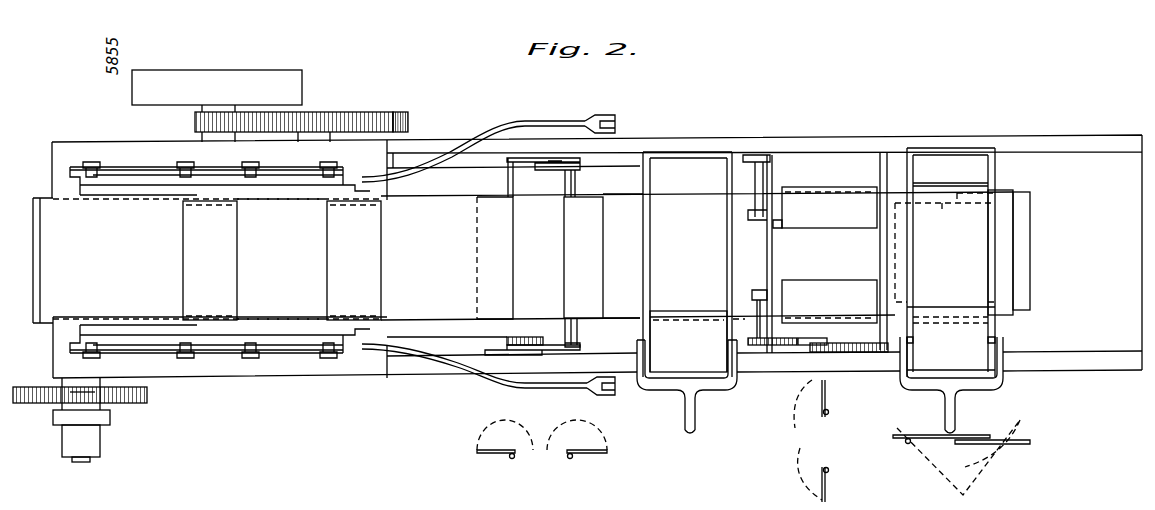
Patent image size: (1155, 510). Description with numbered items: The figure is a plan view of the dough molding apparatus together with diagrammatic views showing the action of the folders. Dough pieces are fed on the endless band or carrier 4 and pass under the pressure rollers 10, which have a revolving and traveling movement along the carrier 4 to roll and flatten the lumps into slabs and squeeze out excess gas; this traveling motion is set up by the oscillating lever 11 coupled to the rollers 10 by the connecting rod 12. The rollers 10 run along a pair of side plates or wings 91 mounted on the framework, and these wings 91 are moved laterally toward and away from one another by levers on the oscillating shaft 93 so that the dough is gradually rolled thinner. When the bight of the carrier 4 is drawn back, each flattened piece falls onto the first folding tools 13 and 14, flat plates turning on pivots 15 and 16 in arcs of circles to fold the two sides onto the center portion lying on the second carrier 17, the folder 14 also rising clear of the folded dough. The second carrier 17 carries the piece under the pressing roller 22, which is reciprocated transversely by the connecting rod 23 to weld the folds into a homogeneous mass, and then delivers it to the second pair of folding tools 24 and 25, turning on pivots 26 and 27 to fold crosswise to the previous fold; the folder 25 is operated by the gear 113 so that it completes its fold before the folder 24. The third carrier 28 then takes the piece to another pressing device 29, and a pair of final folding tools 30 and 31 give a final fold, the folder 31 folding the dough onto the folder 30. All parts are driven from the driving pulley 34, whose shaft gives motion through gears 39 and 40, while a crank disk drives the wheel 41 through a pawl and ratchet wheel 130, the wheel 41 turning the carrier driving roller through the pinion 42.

The endless band or carrier 4 is at (282, 259).
The pressure rollers 10 is at (282, 260).
The oscillating lever 11 is at (613, 124).
The connecting rod 12 is at (553, 113).
The folding tool 13 is at (500, 462).
The folding tool 14 is at (580, 462).
The pivot 15 is at (507, 327).
The pivot 16 is at (580, 330).
The second carrier 17 is at (623, 256).
The pressing roller 22 is at (687, 291).
The connecting rod 23 is at (695, 413).
The folding tool 24 is at (832, 392).
The folding tool 25 is at (832, 485).
The pivot 26 is at (777, 230).
The pivot 27 is at (780, 280).
The third carrier 28 is at (1040, 196).
The pressing device 29 is at (951, 290).
The final folding tool 30 is at (943, 435).
The final folding tool 31 is at (1020, 248).
The driving pulley 34 is at (302, 86).
The gear 39 is at (197, 118).
The gear 40 is at (408, 119).
The wheel 41 is at (147, 395).
The pinion 42 is at (75, 395).
The side plates or wings 91 is at (278, 350).
The oscillating shaft 93 is at (113, 168).
The gear 113 is at (758, 222).
The ratchet wheel 130 is at (110, 420).